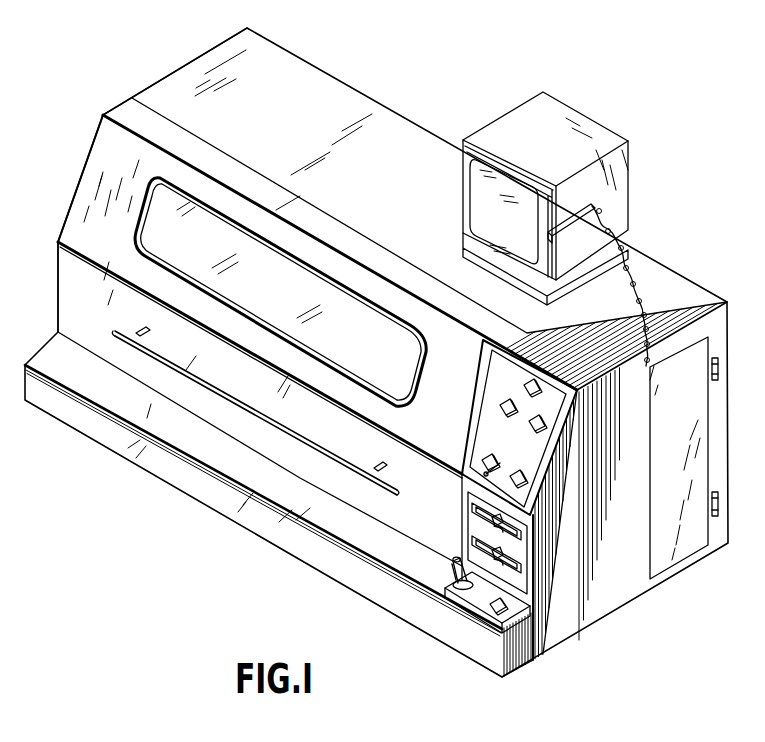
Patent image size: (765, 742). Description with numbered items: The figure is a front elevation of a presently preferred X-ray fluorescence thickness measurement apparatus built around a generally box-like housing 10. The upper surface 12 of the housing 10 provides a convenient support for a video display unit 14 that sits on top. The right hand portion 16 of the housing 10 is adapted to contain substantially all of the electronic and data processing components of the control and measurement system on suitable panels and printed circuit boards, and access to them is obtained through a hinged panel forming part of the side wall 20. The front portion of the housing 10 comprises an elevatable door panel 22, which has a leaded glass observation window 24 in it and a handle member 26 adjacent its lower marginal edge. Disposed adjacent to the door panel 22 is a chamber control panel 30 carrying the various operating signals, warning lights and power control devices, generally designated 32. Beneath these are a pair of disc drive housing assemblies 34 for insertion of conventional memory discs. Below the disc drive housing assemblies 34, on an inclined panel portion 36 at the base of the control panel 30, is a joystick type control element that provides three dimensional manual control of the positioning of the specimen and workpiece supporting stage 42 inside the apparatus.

The housing 10 is at (212, 552).
The upper surface 12 is at (377, 103).
The video display unit 14 is at (607, 141).
The right hand portion 16 is at (562, 401).
The side wall 20 is at (273, 150).
The elevatable door panel 22 is at (106, 148).
The leaded glass observation window 24 is at (415, 374).
The handle member 26 is at (215, 382).
The chamber control panel 30 is at (543, 437).
The operating signals, warning lights and power control devices 32 is at (486, 456).
The disc drive housing assemblies 34 is at (468, 542).
The inclined panel portion 36 is at (122, 420).
The specimen and workpiece supporting stage 42 is at (457, 578).